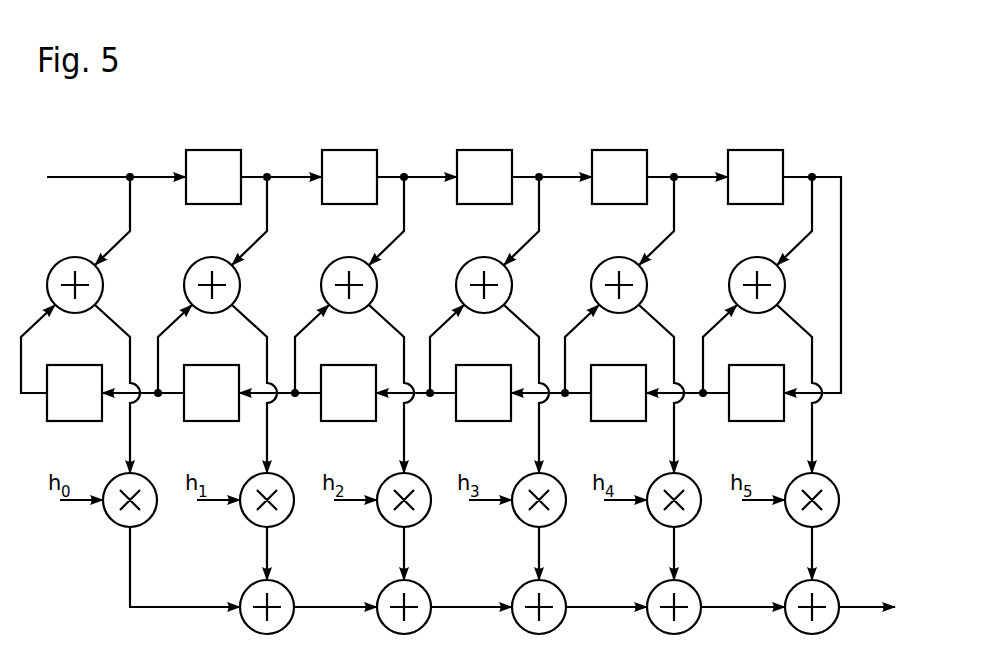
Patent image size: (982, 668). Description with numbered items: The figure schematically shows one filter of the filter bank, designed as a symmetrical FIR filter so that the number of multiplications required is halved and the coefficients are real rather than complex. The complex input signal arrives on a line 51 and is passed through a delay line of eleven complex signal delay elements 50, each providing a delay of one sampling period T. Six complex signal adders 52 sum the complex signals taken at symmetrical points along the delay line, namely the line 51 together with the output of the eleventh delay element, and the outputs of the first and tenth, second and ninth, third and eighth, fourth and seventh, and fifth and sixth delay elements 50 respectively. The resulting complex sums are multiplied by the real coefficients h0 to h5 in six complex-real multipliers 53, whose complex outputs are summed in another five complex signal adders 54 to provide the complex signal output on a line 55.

The complex signal delay element 50 is at (445, 271).
The line 51 is at (69, 176).
The complex signal adder 52 is at (416, 285).
The complex-real multiplier 53 is at (471, 512).
The complex signal adder 54 is at (539, 594).
The line 55 is at (868, 603).